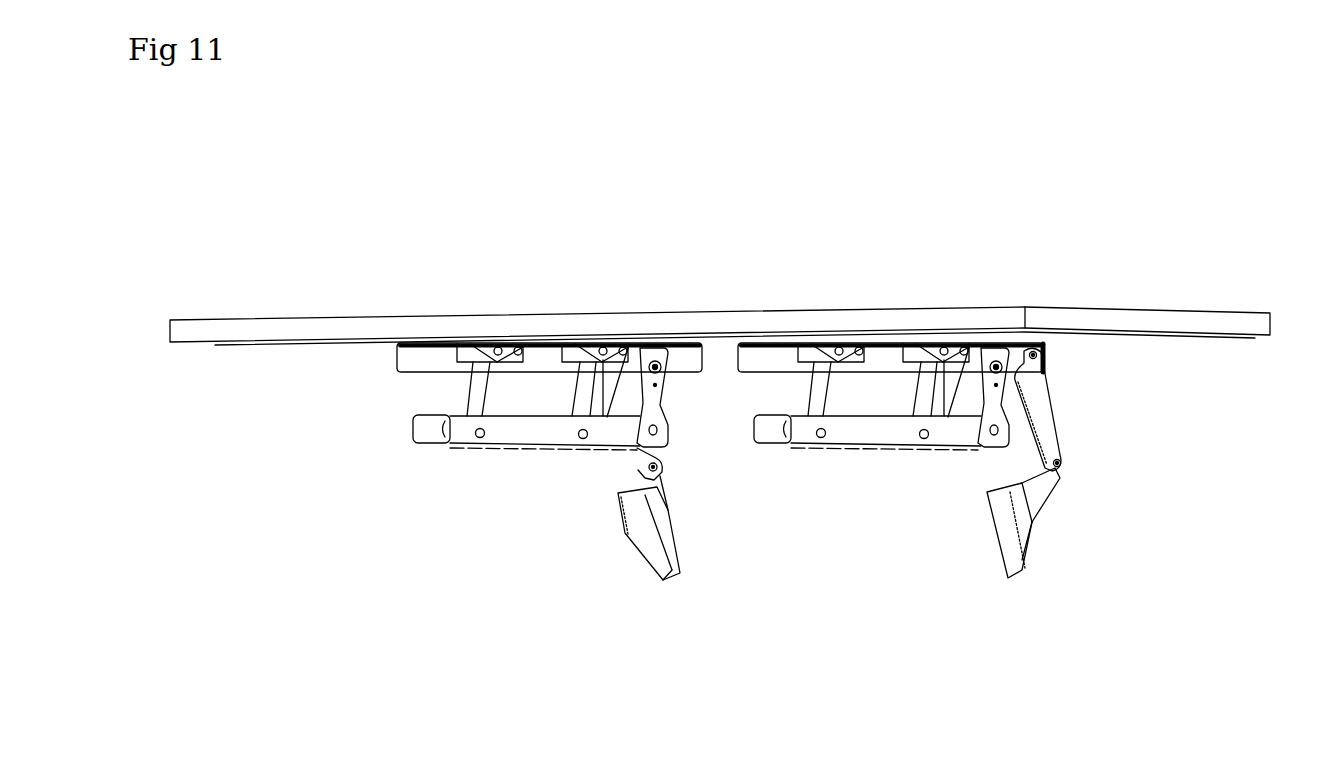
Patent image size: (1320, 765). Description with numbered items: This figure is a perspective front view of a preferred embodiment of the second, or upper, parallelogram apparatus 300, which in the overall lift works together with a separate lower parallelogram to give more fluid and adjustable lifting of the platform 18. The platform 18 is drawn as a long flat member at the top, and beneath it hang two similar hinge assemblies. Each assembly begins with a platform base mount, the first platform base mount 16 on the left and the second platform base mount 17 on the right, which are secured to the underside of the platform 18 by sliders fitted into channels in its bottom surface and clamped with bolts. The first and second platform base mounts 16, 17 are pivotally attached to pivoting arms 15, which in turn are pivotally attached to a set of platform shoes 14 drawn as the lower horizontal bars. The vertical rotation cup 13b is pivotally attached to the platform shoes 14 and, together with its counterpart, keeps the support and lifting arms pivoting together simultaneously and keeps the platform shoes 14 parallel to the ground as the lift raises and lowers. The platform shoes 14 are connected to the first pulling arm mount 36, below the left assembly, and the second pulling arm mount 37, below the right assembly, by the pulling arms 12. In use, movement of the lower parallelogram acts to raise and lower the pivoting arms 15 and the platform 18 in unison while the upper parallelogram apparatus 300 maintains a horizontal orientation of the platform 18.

The second parallelogram apparatus 300 is at (652, 203).
The platform 18 is at (243, 327).
The first platform base mount 16 is at (405, 353).
The second platform base mount 17 is at (870, 428).
The pivoting arms 15 is at (573, 402).
The platform shoes 14 is at (498, 425).
The pulling arms 12 is at (1037, 403).
The vertical rotation cup 13b is at (967, 431).
The first pulling arm mount 36 is at (630, 532).
The second pulling arm mount 37 is at (1032, 503).